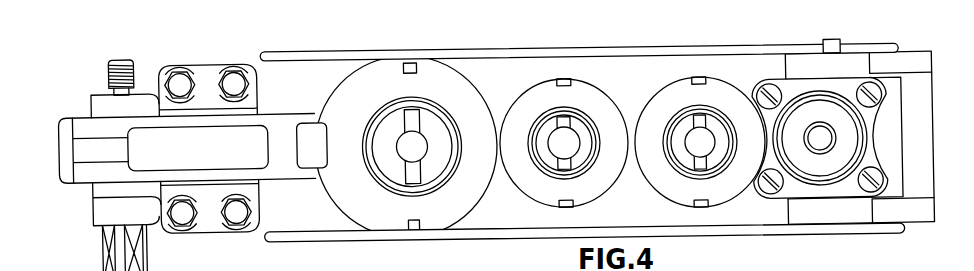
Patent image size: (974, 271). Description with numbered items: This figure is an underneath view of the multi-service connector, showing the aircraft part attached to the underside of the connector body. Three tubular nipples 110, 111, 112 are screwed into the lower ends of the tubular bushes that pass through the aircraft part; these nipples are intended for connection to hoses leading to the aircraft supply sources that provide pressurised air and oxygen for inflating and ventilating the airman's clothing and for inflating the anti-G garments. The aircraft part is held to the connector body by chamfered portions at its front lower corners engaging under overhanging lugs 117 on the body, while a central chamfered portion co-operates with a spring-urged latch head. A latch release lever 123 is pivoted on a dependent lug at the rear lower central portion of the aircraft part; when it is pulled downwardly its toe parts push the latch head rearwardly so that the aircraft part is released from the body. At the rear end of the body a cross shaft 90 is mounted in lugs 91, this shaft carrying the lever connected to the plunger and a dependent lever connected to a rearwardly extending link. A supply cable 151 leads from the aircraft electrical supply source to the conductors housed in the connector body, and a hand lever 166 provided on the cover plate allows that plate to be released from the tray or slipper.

The cross shaft 90 is at (136, 248).
The lugs 91 is at (102, 200).
The tubular nipple 110 is at (426, 100).
The tubular nipple 111 is at (572, 110).
The tubular nipple 112 is at (711, 110).
The overhanging lugs 117 is at (889, 66).
The latch release lever 123 is at (204, 110).
The supply cable 151 is at (818, 132).
The hand lever 166 is at (585, 245).